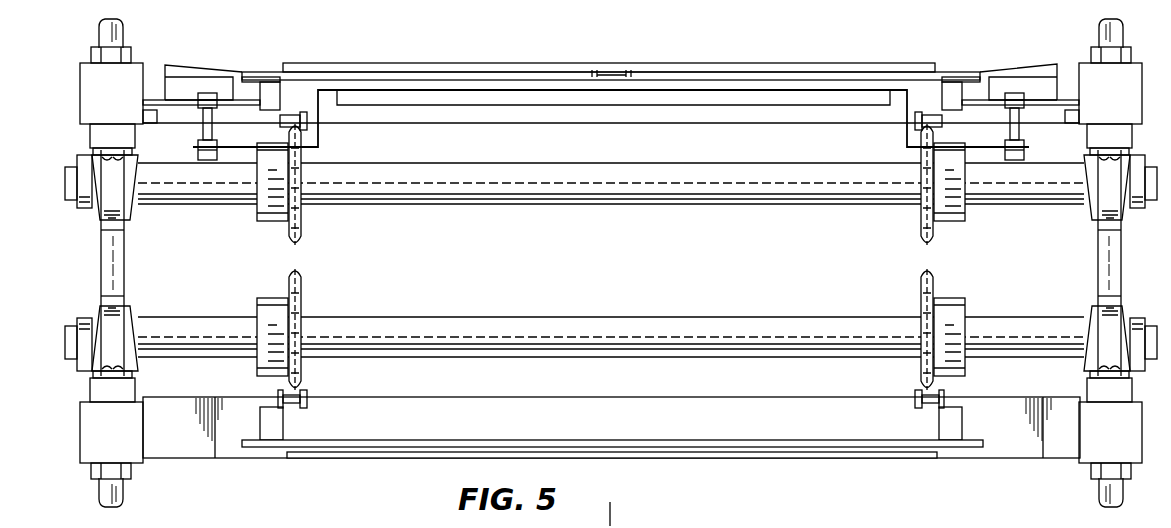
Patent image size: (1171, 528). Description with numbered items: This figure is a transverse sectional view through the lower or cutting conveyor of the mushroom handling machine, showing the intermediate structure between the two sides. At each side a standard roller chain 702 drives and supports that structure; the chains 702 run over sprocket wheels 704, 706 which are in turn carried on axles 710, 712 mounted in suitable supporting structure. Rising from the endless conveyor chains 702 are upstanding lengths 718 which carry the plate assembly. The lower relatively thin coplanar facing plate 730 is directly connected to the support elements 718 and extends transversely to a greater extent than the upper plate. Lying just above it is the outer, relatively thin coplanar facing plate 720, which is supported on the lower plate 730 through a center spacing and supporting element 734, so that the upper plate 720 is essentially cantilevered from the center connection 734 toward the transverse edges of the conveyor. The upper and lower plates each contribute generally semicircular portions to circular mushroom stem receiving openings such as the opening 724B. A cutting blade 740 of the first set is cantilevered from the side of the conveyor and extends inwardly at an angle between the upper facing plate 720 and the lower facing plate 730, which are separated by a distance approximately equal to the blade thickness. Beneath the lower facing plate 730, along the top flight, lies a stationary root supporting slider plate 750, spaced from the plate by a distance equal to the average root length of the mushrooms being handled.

The roller chain 702 is at (293, 122).
The sprocket wheel 704 is at (283, 220).
The sprocket wheel 706 is at (293, 325).
The axle 710 is at (578, 183).
The axle 712 is at (522, 328).
The upstanding length 718 is at (265, 92).
The facing plate 720 is at (563, 65).
The mushroom stem receiving opening 724B is at (801, 521).
The facing plate 730 is at (652, 78).
The center spacing and supporting element 734 is at (612, 70).
The cutting blade 740 is at (212, 66).
The root supporting slider plate 750 is at (441, 90).